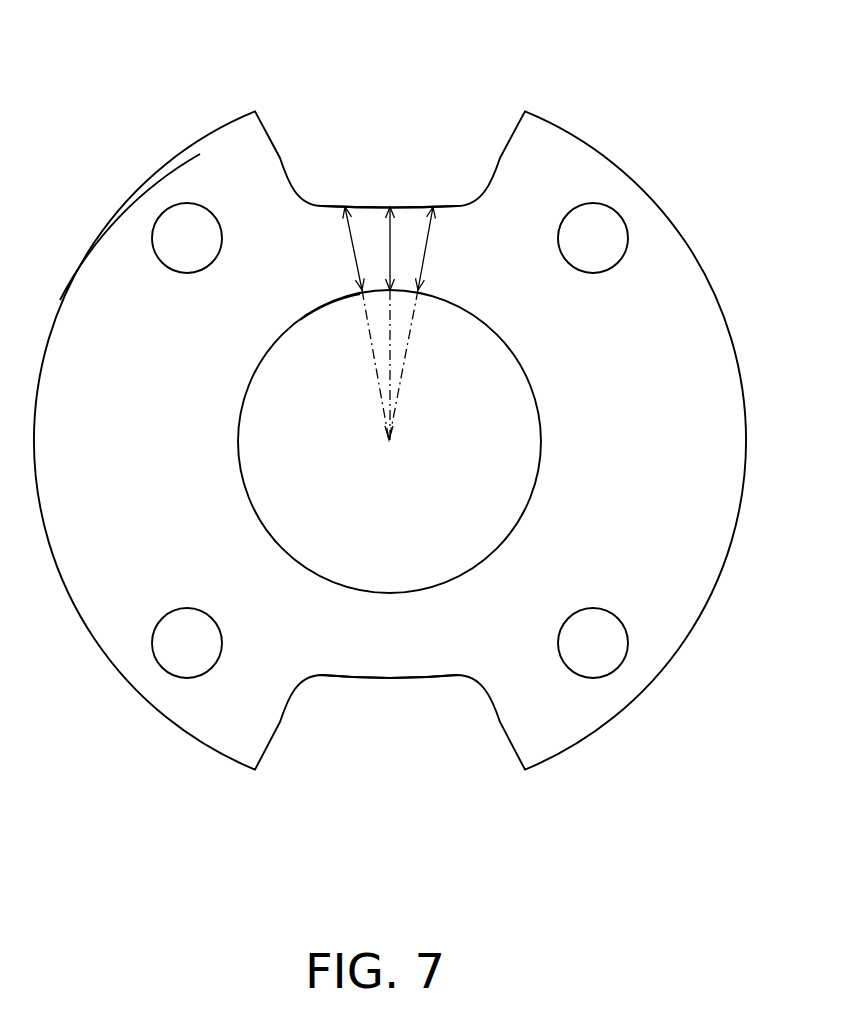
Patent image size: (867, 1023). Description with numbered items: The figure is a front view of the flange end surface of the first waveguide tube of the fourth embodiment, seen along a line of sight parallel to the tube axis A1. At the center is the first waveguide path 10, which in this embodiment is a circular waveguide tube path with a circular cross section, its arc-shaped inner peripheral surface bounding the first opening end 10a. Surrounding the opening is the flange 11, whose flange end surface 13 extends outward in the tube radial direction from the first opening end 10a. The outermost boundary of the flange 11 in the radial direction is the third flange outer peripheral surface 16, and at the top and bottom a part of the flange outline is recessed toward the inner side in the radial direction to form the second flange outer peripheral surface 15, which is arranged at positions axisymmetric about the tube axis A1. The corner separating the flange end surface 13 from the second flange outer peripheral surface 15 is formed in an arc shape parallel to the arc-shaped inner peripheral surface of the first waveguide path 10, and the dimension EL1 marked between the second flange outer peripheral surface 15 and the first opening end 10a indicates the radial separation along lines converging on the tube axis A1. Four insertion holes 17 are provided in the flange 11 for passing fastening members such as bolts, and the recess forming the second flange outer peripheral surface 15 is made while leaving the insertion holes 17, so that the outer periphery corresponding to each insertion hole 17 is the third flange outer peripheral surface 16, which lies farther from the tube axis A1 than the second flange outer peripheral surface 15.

The flange 11 is at (82, 142).
The third flange outer peripheral surface 16 is at (100, 232).
The flange end surface 13 is at (182, 422).
The insertion hole 17 is at (203, 252).
The first waveguide path 10 is at (392, 527).
The first opening end 10a is at (340, 300).
The tube axis A1 is at (392, 441).
The distance between notch and shaft EL1 is at (352, 250).
The second flange outer peripheral surface 15 is at (345, 207).